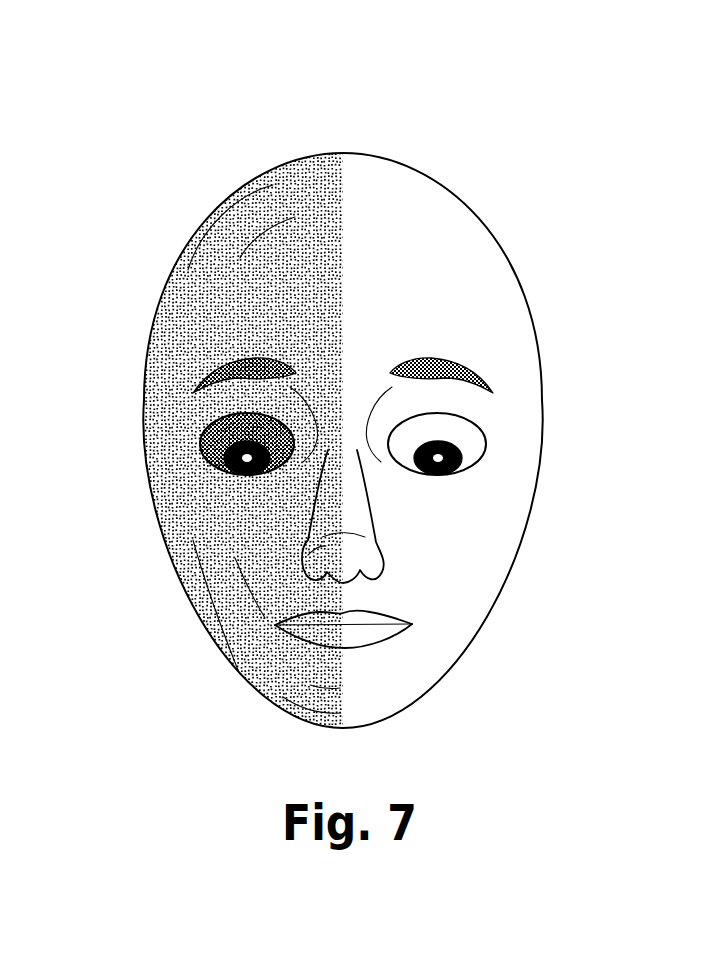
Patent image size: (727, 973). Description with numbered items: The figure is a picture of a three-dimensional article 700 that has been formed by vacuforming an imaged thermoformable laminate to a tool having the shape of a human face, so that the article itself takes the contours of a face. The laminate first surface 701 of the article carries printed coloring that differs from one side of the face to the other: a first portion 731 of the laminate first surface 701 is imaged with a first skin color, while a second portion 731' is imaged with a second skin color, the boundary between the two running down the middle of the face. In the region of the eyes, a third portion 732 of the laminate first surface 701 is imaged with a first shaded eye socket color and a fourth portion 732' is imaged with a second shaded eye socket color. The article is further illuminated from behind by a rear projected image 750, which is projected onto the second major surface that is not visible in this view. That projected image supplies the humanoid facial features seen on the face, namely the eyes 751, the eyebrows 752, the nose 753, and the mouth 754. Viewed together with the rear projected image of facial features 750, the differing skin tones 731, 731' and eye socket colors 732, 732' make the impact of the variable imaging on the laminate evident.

The 3D article 700 is at (210, 97).
The laminate first surface 701 is at (342, 177).
The first portion 731 is at (171, 256).
The second portion 731' is at (545, 313).
The eyebrows 752 is at (222, 373).
The third portion 732 is at (196, 431).
The fourth portion 732' is at (494, 431).
The eyes 751 is at (213, 450).
The nose 753 is at (305, 552).
The mouth 754 is at (322, 633).
The rear projected image 750 is at (447, 630).